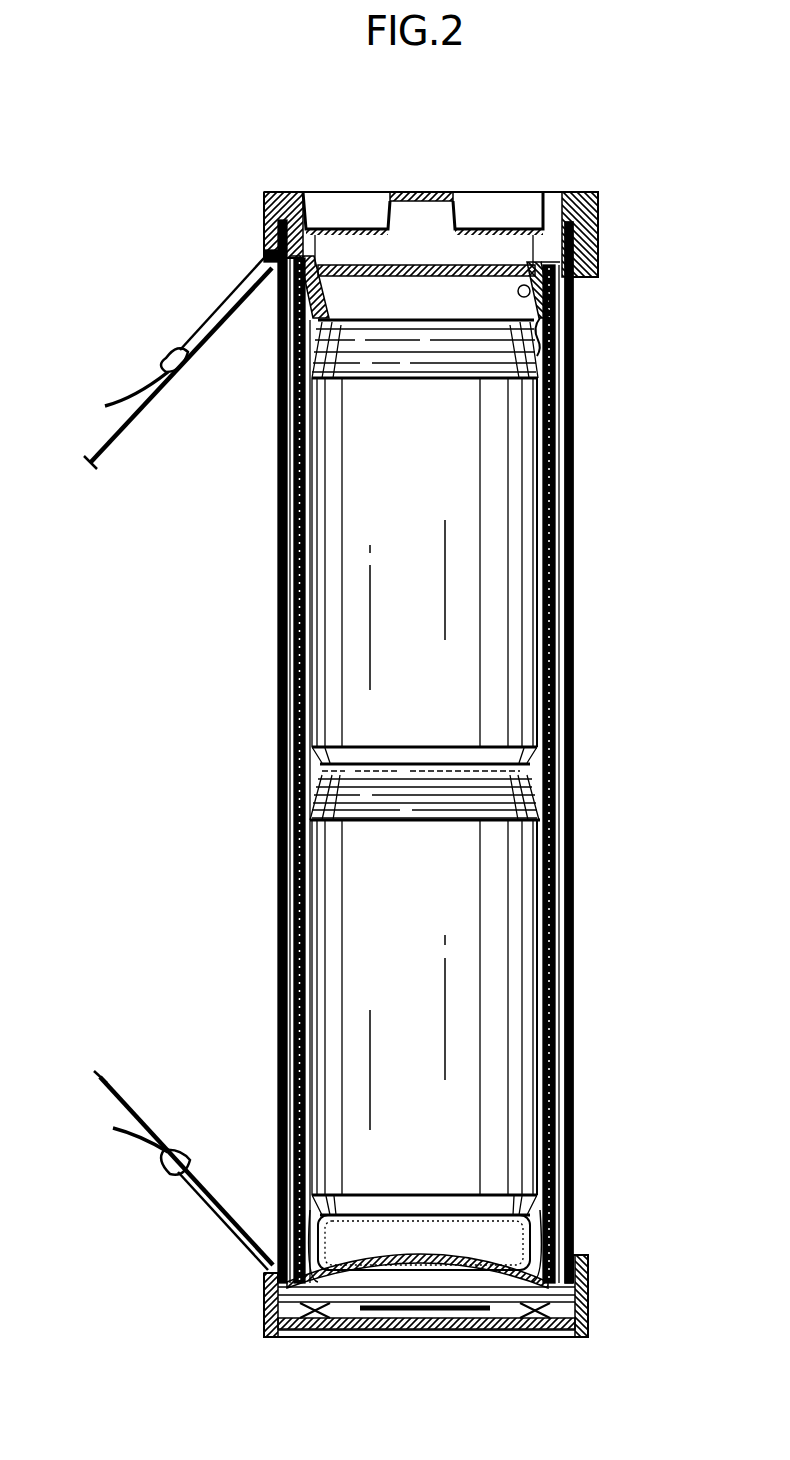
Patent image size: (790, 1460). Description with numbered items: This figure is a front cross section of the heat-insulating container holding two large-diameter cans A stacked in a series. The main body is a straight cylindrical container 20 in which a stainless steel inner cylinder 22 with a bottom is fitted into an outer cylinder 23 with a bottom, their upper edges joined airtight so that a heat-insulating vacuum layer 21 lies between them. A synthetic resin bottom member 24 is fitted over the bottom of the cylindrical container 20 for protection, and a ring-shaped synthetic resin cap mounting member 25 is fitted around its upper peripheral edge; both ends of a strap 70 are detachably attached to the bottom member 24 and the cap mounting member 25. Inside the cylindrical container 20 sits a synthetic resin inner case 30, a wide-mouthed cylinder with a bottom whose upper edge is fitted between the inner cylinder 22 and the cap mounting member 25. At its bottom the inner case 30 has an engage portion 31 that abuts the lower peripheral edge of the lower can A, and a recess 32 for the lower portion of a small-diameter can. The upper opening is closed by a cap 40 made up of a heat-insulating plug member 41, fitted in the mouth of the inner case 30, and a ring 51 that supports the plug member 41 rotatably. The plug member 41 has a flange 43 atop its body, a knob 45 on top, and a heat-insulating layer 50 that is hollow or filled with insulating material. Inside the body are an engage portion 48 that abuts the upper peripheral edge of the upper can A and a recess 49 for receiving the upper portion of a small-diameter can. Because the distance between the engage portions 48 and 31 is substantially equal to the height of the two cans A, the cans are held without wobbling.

The cylindrical container 20 is at (576, 554).
The heat-insulating vacuum layer 21 is at (572, 823).
The inner cylinder 22 is at (293, 720).
The outer cylinder 23 is at (282, 760).
The bottom member 24 is at (590, 1307).
The cap mounting member 25 is at (260, 238).
The inner case 30 is at (566, 740).
The engage portion 31 is at (558, 1195).
The recess 32 is at (510, 1237).
The cap 40 is at (453, 233).
The plug member 41 is at (348, 195).
The flange 43 is at (296, 192).
The knob 45 is at (427, 192).
The engage portion 48 is at (560, 345).
The recess 49 is at (560, 302).
The heat-insulating layer 50 is at (437, 222).
The ring 51 is at (586, 193).
The strap 70 is at (106, 438).
The large-diameter can A is at (345, 537).